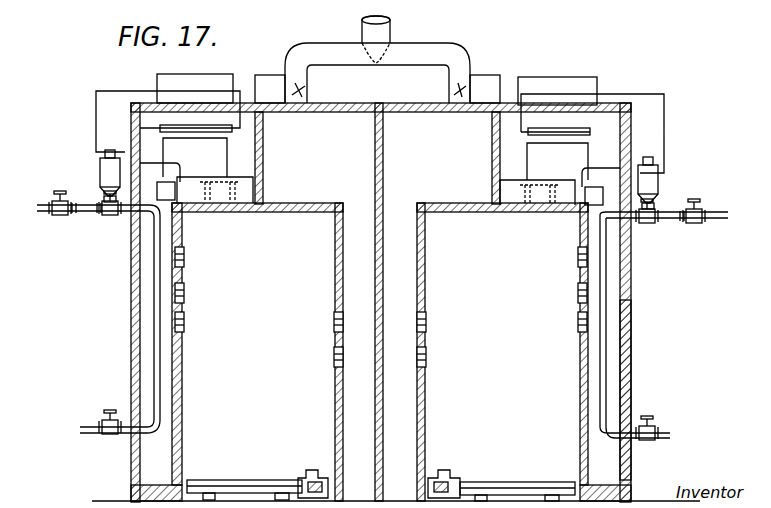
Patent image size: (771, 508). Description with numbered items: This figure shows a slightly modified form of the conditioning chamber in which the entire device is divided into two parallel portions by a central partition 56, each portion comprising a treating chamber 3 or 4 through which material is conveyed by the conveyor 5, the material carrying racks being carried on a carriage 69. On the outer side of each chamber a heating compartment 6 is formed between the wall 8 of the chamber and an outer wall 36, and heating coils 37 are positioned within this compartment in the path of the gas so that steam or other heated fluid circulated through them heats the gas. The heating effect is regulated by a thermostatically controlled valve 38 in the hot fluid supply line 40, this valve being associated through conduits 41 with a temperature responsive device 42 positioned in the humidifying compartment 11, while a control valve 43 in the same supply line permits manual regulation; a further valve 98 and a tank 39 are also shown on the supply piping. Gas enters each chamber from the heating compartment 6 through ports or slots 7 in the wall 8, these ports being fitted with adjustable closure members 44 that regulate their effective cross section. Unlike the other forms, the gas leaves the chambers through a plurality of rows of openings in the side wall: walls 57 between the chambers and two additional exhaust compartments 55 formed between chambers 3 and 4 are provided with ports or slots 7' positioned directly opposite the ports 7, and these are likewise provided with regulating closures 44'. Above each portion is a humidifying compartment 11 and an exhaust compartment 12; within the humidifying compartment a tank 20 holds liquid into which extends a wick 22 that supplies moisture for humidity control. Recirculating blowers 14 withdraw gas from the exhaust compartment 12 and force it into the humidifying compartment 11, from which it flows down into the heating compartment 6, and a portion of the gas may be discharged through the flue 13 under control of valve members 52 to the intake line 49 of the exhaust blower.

The passageway 3 is at (292, 252).
The passageway 4 is at (482, 261).
The conveyor 5 is at (312, 470).
The heating compartment 6 is at (138, 322).
The ports or slots 7 is at (381, 307).
The ports or slots 7' is at (382, 339).
The wall 8 is at (182, 405).
The humidifying compartment 11 is at (618, 118).
The exhaust compartment 12 is at (377, 158).
The flue 13 is at (286, 68).
The recirculating blower 14 is at (195, 78).
The tank 20 is at (232, 202).
The wick 22 is at (200, 180).
The outer wall 36 is at (632, 372).
The heating coils 37 is at (153, 272).
The thermostatically controlled valve 38 is at (655, 224).
The tank 39 is at (108, 172).
The hot fluid supply line 40 is at (40, 213).
The conduits 41 is at (96, 110).
The temperature responsive device 42 is at (212, 135).
The control valve 43 is at (64, 218).
The closure members 44 is at (381, 258).
The regulating closures 44' is at (450, 321).
The intake line 49 is at (390, 25).
The valve members 52 is at (305, 92).
The exhaust compartment 55 is at (346, 409).
The partition 56 is at (383, 193).
The walls 57 is at (427, 403).
The carriage 69 is at (257, 479).
The valve 98 is at (112, 218).